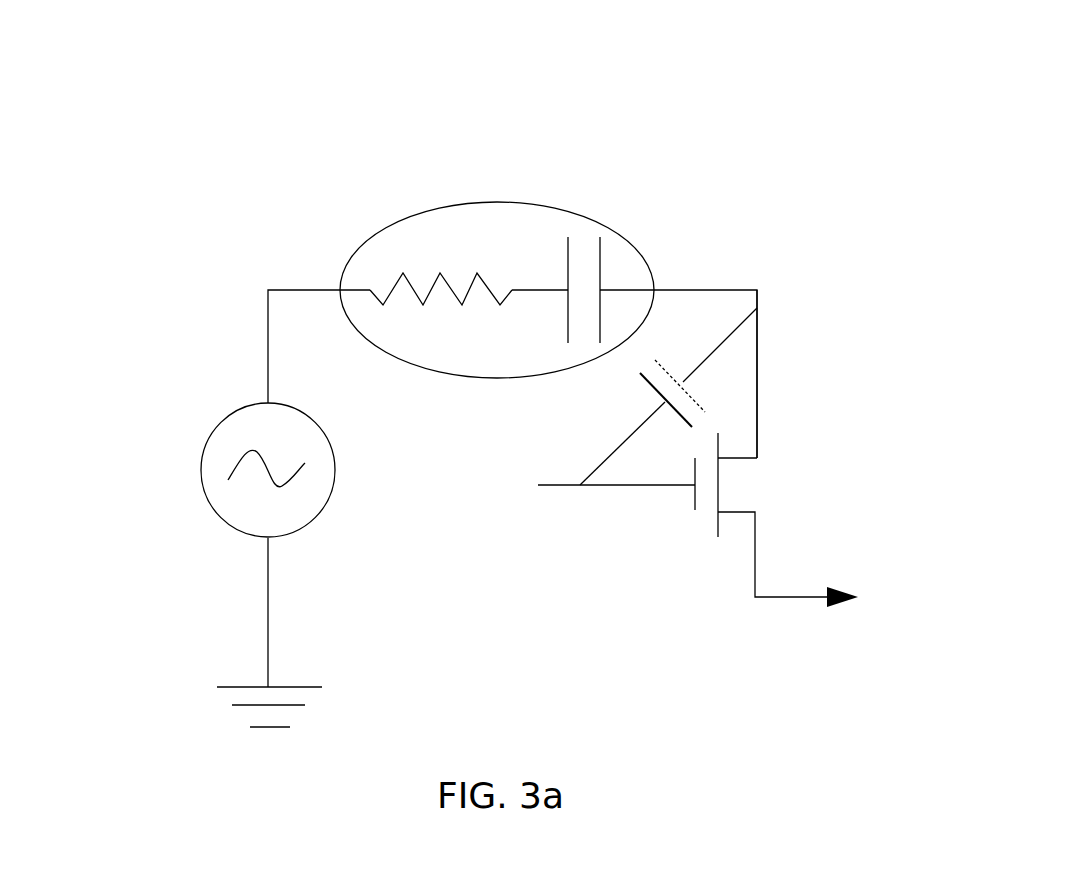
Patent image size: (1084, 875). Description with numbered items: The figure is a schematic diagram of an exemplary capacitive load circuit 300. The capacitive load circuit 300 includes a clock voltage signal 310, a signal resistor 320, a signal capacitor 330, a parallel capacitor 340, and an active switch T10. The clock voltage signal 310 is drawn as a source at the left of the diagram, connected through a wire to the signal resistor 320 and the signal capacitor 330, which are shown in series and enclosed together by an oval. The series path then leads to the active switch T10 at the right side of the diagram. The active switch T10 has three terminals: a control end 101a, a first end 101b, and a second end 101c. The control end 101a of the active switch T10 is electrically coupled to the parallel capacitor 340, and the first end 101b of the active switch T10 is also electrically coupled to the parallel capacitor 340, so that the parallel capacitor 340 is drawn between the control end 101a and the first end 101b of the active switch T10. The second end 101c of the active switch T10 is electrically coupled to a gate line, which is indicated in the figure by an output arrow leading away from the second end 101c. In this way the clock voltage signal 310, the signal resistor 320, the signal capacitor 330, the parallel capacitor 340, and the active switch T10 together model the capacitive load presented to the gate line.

The capacitive load circuit 300 is at (311, 118).
The clock voltage signal 310 is at (201, 478).
The signal resistor 320 is at (435, 266).
The signal capacitor 330 is at (585, 236).
The parallel capacitor 340 is at (680, 366).
The active switch T10 is at (732, 482).
The control end 101a is at (682, 488).
The first end 101b is at (757, 413).
The second end 101c is at (817, 595).